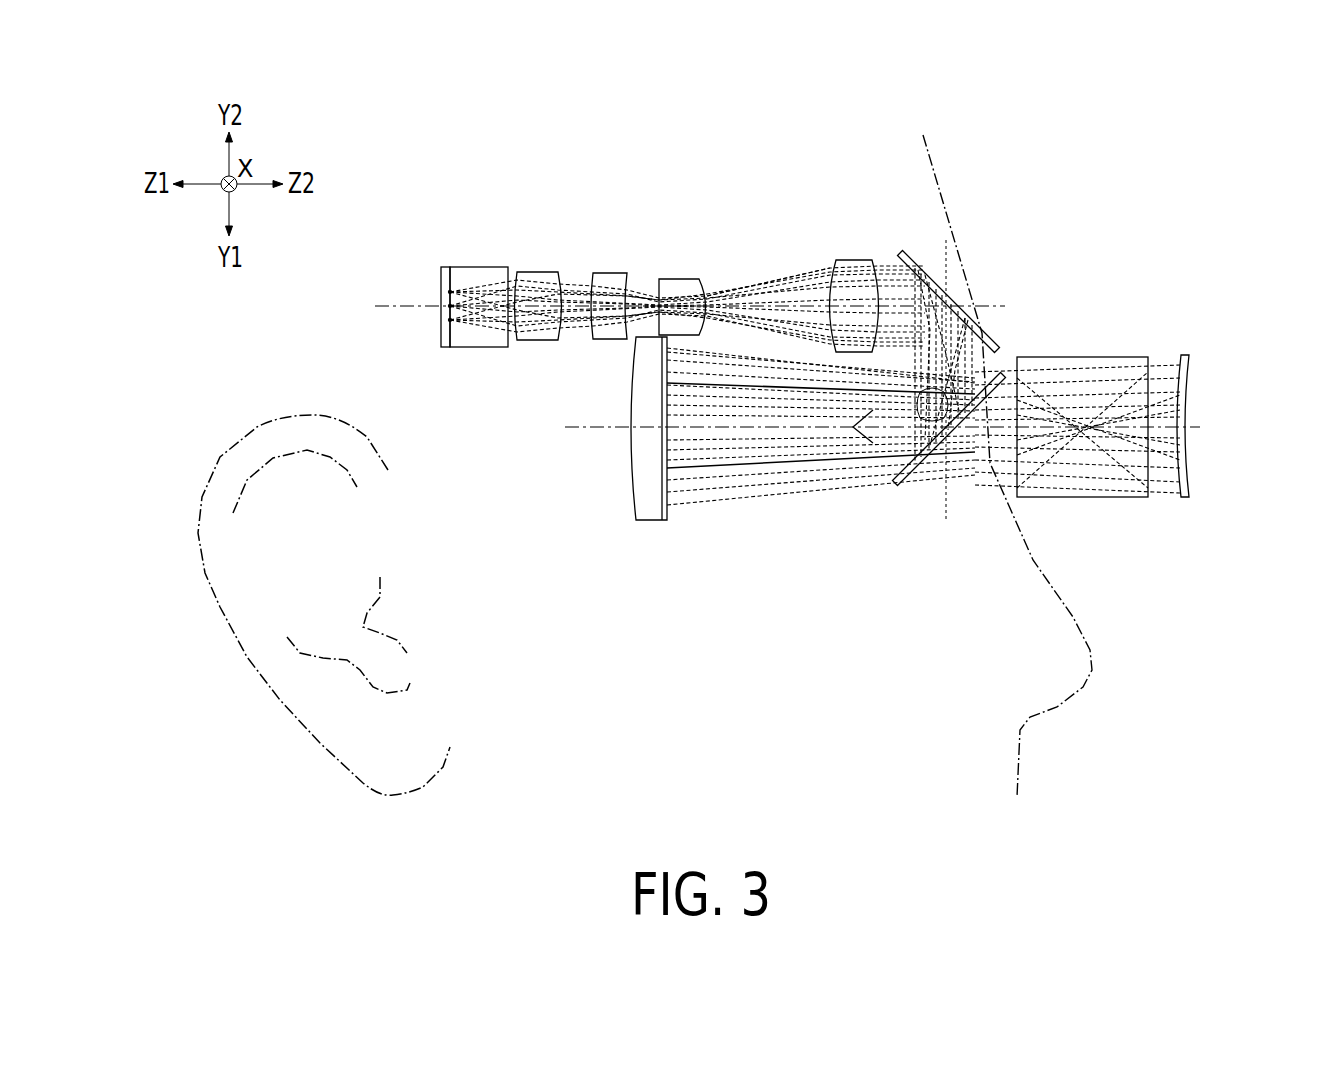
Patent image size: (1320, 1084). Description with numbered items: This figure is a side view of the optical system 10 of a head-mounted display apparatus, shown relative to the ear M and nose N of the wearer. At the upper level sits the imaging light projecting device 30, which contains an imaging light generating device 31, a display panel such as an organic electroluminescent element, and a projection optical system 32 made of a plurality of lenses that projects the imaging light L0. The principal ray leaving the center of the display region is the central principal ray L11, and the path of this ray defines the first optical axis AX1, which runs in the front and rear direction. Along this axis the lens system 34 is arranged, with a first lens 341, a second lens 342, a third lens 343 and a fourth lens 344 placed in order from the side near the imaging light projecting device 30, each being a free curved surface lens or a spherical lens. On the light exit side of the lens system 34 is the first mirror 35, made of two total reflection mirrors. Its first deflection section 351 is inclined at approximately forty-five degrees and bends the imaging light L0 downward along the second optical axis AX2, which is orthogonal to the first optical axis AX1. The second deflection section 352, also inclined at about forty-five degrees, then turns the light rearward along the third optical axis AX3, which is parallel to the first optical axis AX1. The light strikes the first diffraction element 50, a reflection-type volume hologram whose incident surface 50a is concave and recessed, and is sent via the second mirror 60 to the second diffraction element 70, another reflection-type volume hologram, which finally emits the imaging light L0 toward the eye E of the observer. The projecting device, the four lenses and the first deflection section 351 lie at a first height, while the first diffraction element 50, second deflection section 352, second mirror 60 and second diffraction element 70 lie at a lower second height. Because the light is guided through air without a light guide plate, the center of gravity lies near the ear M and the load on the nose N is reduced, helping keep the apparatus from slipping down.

The optical system 10 is at (1006, 188).
The imaging light projecting device 30 is at (515, 150).
The imaging light generating device 31 is at (445, 266).
The projection optical system 32 is at (482, 270).
The lens system 34 is at (882, 150).
The first lens 341 is at (536, 272).
The second lens 342 is at (608, 274).
The third lens 343 is at (690, 280).
The fourth lens 344 is at (850, 262).
The first mirror 35 is at (1011, 419).
The first deflection section 351 is at (990, 346).
The second deflection section 352 is at (906, 484).
The first diffraction element 50 is at (668, 476).
The incident surface 50a is at (672, 519).
The second mirror 60 is at (1102, 498).
The second diffraction element 70 is at (1188, 445).
The imaging light L0 is at (787, 283).
The central principal ray L11 is at (478, 312).
The first optical axis AX1 is at (395, 308).
The second optical axis AX2 is at (948, 266).
The third optical axis AX3 is at (580, 430).
The eye E is at (955, 460).
The ear M is at (278, 433).
The nose N is at (1060, 665).